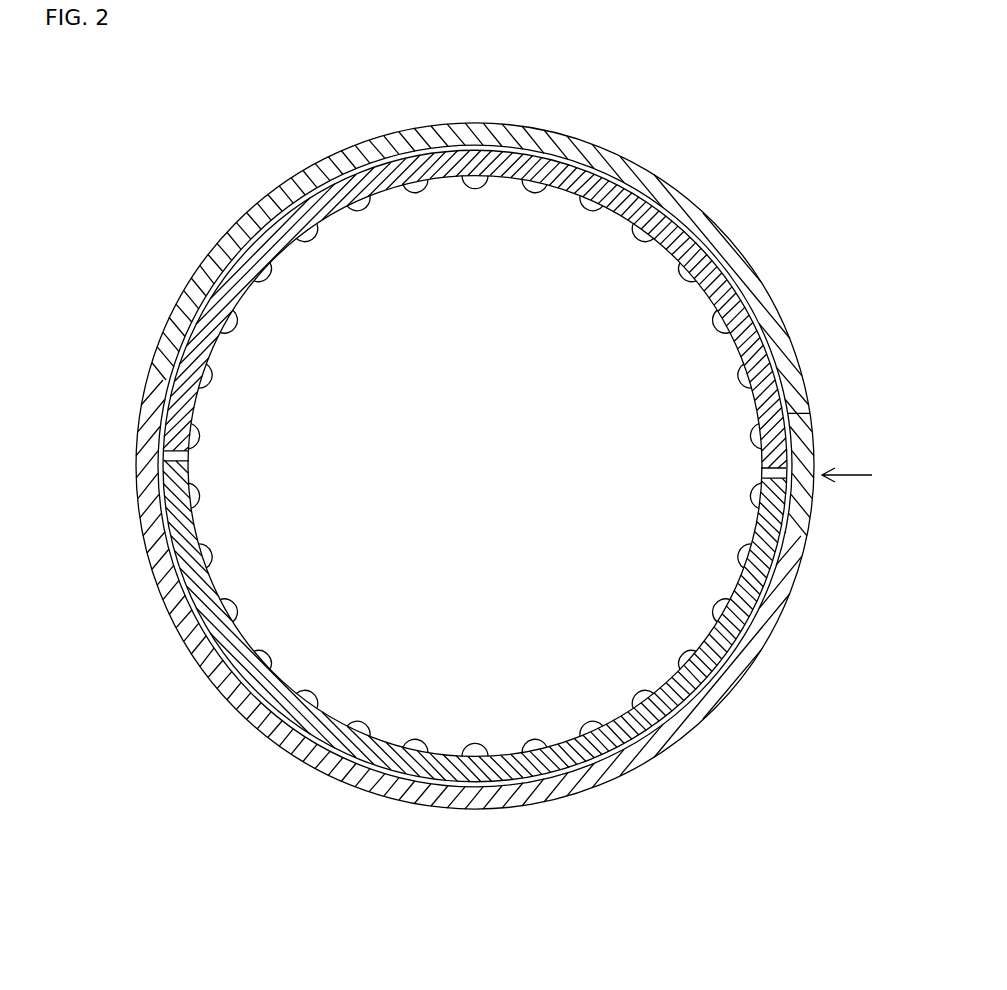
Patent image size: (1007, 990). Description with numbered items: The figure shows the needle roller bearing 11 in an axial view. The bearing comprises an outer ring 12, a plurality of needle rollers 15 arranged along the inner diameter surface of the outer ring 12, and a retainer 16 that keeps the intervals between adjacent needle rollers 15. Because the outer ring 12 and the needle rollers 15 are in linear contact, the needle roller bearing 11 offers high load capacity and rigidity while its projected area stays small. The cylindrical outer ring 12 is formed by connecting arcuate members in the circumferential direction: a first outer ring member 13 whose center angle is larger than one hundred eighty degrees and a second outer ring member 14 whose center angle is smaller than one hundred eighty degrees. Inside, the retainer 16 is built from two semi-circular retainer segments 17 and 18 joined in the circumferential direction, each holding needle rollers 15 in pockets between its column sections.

The needle roller bearing 11 is at (231, 122).
The outer ring 12 is at (90, 363).
The first outer ring member 13 is at (150, 410).
The second outer ring member 14 is at (157, 376).
The needle rollers 15 is at (478, 146).
The retainer 16 is at (90, 450).
The retainer segment 17 is at (173, 443).
The retainer segment 18 is at (167, 497).